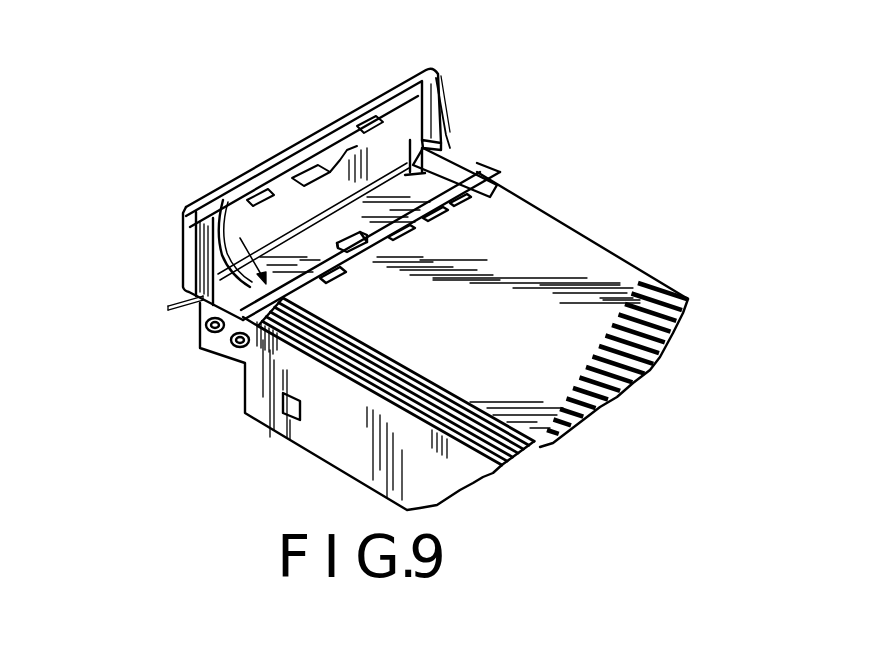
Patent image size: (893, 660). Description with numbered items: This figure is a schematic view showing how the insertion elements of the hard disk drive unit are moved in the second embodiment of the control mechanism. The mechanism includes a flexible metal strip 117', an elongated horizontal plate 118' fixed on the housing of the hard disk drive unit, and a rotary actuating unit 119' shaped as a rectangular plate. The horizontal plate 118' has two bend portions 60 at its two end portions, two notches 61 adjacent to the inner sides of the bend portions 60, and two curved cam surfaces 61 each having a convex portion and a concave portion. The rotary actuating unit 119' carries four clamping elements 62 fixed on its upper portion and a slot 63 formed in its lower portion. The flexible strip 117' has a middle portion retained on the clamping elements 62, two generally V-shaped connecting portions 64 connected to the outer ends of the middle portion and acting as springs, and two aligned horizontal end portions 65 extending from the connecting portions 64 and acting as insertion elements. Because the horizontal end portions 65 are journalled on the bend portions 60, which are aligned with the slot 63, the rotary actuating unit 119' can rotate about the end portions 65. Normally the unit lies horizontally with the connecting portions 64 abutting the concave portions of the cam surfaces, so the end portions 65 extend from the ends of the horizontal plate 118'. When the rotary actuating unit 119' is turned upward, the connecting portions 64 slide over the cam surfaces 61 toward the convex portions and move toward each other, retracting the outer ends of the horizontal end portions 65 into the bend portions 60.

The bend portion 60 is at (489, 150).
The notch 61 is at (245, 335).
The clamping element 62 is at (372, 116).
The slot 63 is at (197, 263).
The V-shaped connecting portion 64 is at (420, 76).
The horizontal end portion 65 is at (448, 140).
The flexible metal strip 117' is at (179, 237).
The elongated horizontal plate 118' is at (165, 323).
The rotary actuating unit 119' is at (313, 135).